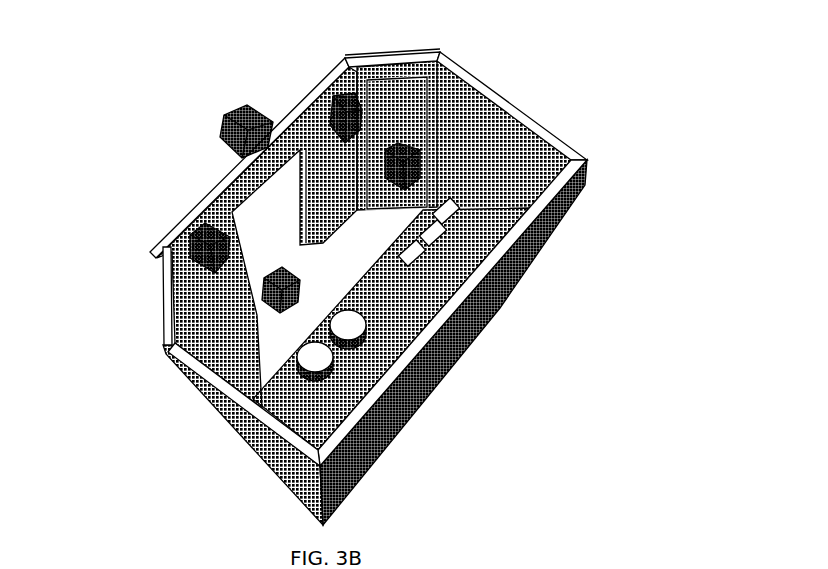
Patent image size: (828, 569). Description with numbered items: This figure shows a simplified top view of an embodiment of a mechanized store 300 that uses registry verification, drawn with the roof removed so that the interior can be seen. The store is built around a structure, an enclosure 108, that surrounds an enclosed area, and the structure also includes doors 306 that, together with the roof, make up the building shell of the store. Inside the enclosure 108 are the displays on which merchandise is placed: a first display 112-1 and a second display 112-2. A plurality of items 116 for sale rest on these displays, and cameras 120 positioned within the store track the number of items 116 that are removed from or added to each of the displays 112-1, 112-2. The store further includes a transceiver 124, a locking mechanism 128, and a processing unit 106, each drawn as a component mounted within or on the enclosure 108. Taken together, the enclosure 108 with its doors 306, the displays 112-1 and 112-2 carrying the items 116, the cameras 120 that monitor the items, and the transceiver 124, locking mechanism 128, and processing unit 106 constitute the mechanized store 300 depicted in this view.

The mechanized store 300 is at (624, 62).
The doors 306 is at (293, 95).
The transceiver 124 is at (321, 105).
The locking mechanism 128 is at (245, 124).
The processing unit 106 is at (205, 240).
The cameras 120 is at (405, 190).
The items 116 is at (318, 362).
The enclosure 108 is at (540, 222).
The first display 112-1 is at (513, 178).
The second display 112-2 is at (356, 368).